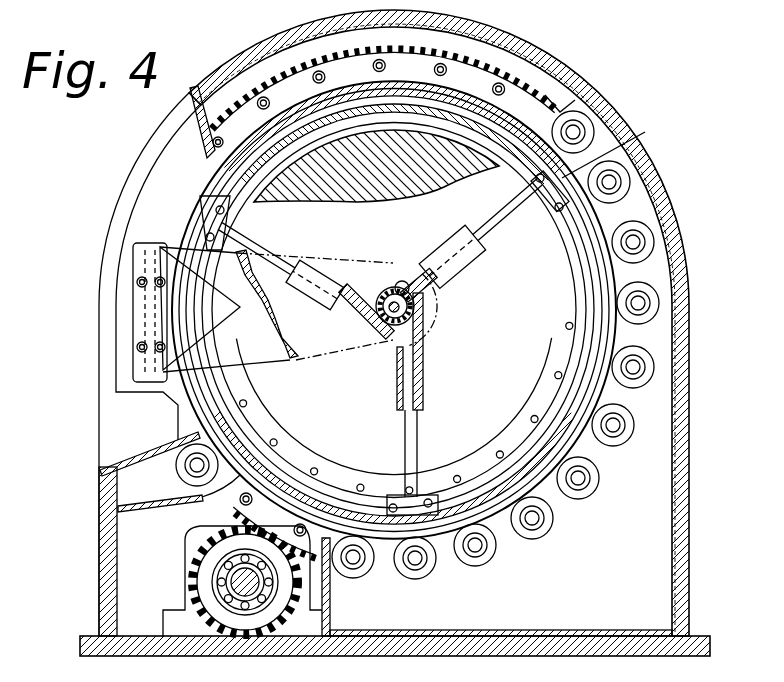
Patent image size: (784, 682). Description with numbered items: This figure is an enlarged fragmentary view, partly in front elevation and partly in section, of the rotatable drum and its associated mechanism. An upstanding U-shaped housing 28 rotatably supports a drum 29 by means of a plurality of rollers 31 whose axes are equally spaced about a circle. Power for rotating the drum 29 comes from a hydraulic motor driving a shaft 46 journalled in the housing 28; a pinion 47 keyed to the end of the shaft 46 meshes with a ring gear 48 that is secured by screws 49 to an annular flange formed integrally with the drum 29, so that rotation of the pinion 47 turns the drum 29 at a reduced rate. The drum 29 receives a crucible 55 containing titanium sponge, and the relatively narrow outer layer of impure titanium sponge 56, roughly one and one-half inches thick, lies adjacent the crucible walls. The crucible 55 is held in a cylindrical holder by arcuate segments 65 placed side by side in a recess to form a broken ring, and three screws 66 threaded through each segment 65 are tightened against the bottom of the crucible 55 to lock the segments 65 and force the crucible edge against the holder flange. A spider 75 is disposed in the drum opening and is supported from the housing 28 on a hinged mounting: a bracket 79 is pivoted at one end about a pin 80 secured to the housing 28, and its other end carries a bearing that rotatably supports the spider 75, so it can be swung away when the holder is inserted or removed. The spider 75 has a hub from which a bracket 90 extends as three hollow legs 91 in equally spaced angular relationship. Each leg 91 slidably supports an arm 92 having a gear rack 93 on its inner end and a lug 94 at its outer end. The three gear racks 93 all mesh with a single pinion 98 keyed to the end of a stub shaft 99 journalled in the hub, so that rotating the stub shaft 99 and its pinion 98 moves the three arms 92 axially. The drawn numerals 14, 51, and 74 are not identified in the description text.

The drum 14 is at (532, 212).
The housing 28 is at (690, 470).
The drum 29 is at (614, 150).
The rollers 31 is at (650, 183).
The shaft 46 is at (231, 580).
The pinion 47 is at (205, 530).
The ring gear 48 is at (330, 580).
The screws 49 is at (375, 68).
The gear cover bracket 51 is at (540, 104).
The crucible 55 is at (403, 135).
The outer layer of impure titanium sponge 56 is at (455, 140).
The arcuate segments 65 is at (536, 392).
The screws 66 is at (556, 376).
The arm mounting bolts 74 is at (232, 220).
The spider 75 is at (450, 306).
The bracket 79 is at (280, 330).
The pin 80 is at (133, 295).
The bracket 90 is at (403, 285).
The hollow legs 91 is at (460, 262).
The arms 92 is at (272, 238).
The gear racks 93 is at (428, 290).
The lug 94 is at (200, 215).
The pinion 98 is at (412, 318).
The stub shaft 99 is at (392, 300).